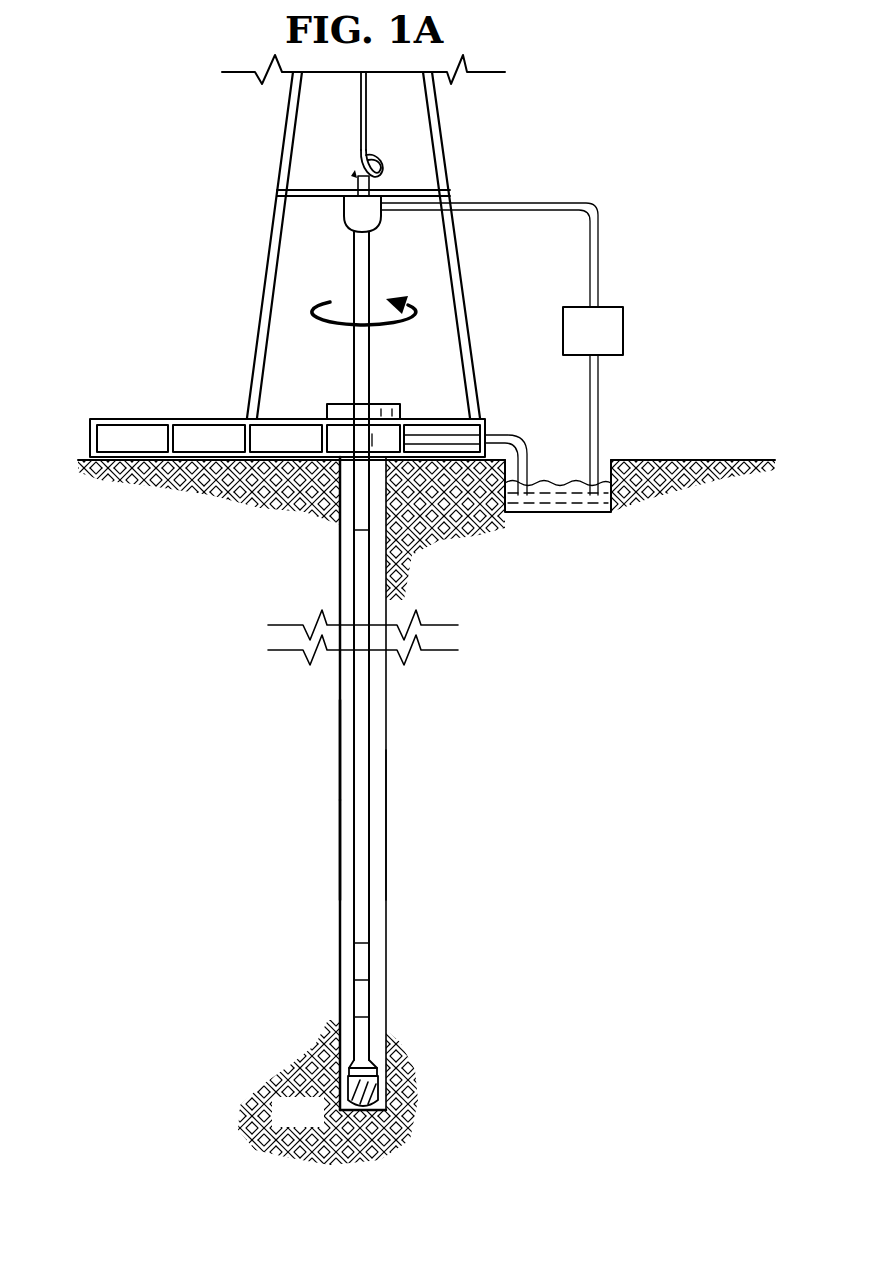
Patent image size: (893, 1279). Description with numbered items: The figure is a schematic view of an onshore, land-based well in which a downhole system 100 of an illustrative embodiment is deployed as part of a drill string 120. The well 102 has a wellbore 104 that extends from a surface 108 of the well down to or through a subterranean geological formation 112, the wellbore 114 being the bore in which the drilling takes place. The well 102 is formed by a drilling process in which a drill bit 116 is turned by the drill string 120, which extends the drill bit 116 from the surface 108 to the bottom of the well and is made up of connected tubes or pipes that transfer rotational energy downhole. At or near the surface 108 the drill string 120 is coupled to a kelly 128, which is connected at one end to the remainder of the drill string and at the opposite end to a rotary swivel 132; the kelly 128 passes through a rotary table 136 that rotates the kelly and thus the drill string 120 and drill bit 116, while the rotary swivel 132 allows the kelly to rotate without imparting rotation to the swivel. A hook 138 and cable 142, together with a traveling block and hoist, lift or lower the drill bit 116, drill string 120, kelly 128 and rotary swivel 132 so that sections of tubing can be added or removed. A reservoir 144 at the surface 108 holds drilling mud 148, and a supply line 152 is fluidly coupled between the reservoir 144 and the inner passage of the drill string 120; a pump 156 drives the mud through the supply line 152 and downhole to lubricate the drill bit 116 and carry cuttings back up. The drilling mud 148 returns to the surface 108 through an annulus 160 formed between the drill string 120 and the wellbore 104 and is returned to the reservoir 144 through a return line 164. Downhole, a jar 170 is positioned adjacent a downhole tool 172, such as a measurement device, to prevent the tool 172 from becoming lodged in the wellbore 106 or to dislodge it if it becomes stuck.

The downhole system 100 is at (204, 219).
The well 102 is at (390, 392).
The wellbore 104 is at (345, 772).
The wellbore 106 is at (390, 800).
The surface 108 is at (707, 460).
The subterranean geological formation 112 is at (320, 1126).
The wellbore 114 is at (392, 736).
The drill bit 116 is at (385, 1084).
The drill string 120 is at (352, 720).
The kelly 128 is at (371, 272).
The rotary swivel 132 is at (343, 234).
The rotary table 136 is at (341, 404).
The hook 138 is at (380, 168).
The cable 142 is at (357, 130).
The reservoir 144 is at (568, 513).
The drilling mud 148 is at (538, 482).
The supply line 152 is at (548, 203).
The pump 156 is at (623, 330).
The annulus 160 is at (346, 804).
The return line 164 is at (497, 433).
The jar 170 is at (366, 961).
The downhole tool 172 is at (365, 996).